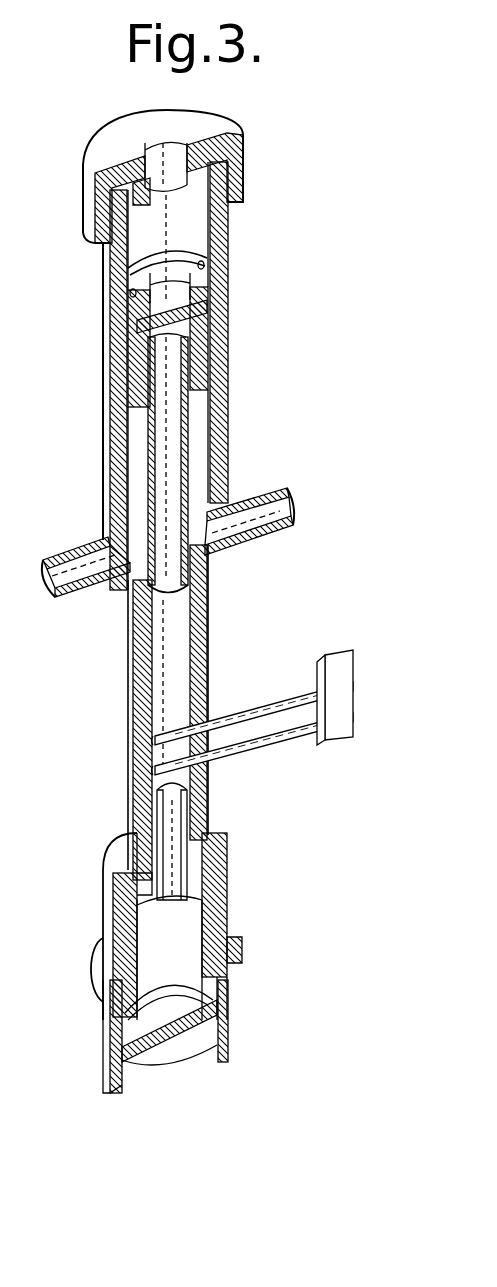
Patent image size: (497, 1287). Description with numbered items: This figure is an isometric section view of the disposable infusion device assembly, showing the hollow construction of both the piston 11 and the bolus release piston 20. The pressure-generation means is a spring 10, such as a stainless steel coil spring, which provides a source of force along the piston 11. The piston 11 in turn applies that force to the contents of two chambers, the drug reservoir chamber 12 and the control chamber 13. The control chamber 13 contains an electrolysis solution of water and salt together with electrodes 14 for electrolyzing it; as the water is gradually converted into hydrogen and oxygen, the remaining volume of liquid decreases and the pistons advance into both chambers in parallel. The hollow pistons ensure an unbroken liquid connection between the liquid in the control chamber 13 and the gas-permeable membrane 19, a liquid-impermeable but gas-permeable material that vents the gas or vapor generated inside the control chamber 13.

The spring 10 is at (172, 253).
The piston 11 is at (188, 417).
The drug reservoir chamber 12 is at (133, 472).
The control chamber 13 is at (175, 652).
The electrodes 14 is at (277, 735).
The gas-permeable membrane 19 is at (137, 332).
The bolus release piston 20 is at (225, 1030).